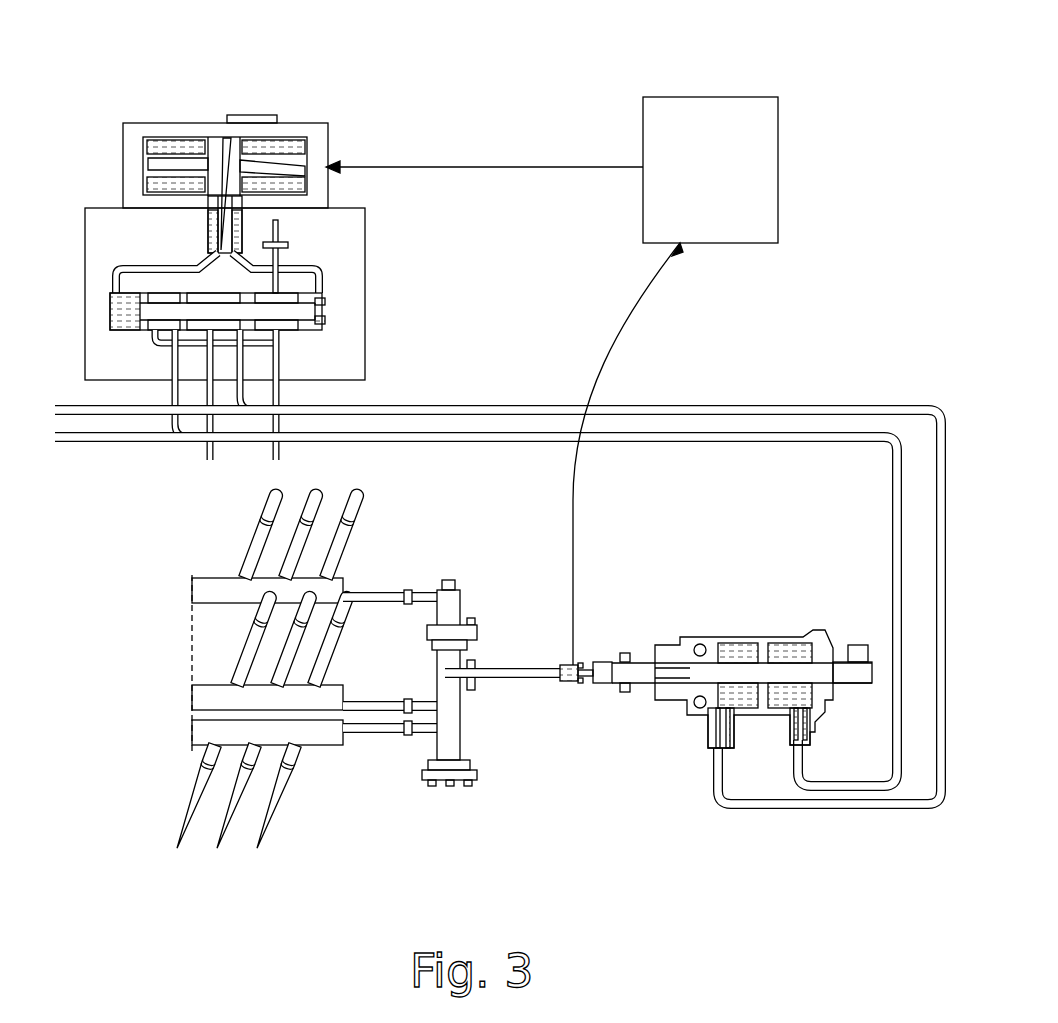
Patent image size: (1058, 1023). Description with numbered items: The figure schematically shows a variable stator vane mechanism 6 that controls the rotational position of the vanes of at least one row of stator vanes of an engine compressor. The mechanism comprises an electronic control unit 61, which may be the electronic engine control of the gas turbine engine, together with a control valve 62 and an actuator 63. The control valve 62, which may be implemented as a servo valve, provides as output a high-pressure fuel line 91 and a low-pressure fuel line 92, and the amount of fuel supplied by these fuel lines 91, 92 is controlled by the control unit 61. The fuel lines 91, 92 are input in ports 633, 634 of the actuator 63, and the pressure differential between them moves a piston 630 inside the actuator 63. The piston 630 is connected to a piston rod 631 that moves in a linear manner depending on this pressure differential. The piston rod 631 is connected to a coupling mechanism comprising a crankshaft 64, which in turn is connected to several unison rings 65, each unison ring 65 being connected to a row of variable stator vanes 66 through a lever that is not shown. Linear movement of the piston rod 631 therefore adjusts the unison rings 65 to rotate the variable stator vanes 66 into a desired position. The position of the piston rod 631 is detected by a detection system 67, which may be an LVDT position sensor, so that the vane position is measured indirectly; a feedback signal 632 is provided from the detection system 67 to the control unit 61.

The variable stator vane mechanism 6 is at (330, 848).
The electronic control unit 61 is at (705, 97).
The control valve 62 is at (320, 123).
The actuator 63 is at (739, 683).
The piston 630 is at (741, 670).
The piston rod 631 is at (540, 678).
The feedback signal 632 is at (615, 358).
The port 633 is at (733, 746).
The port 634 is at (810, 742).
The crankshaft 64 is at (458, 744).
The unison rings 65 is at (395, 592).
The variable stator vanes 66 is at (262, 520).
The detection system 67 is at (572, 665).
The high-pressure fuel line 91 is at (548, 440).
The low-pressure fuel line 92 is at (646, 412).